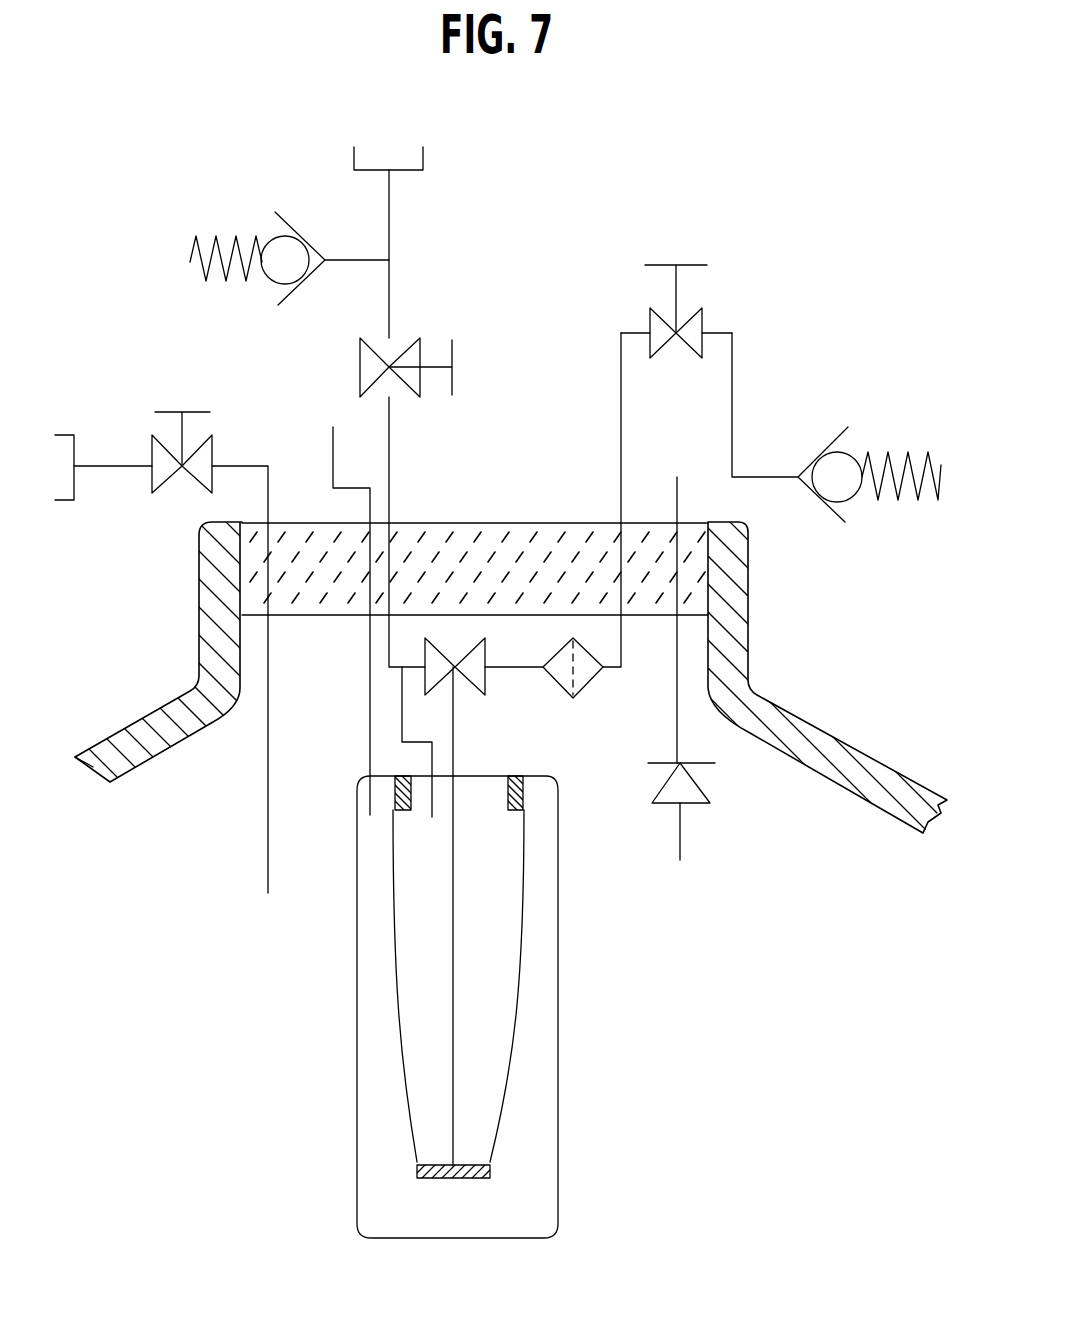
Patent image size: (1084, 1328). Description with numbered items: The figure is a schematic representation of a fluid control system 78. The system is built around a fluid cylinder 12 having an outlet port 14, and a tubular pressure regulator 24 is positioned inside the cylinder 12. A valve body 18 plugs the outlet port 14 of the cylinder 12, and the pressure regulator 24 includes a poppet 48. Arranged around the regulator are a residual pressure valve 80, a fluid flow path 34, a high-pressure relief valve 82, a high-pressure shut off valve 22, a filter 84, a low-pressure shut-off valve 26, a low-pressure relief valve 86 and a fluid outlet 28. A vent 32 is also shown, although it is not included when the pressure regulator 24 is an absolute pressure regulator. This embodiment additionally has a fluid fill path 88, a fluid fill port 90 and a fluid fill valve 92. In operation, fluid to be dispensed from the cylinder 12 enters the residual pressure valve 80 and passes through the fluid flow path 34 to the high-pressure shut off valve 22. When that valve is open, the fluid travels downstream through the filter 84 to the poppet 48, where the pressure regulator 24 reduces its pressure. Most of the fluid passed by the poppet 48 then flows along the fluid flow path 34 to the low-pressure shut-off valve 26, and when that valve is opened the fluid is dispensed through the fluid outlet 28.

The fluid cylinder 12 is at (160, 705).
The outlet port 14 is at (700, 516).
The valve body 18 is at (553, 530).
The high-pressure shut off valve 22 is at (703, 322).
The tubular pressure regulator 24 is at (560, 1183).
The low-pressure shut-off valve 26 is at (405, 336).
The fluid outlet 28 is at (395, 160).
The vent 32 is at (332, 460).
The fluid flow path 34 is at (390, 462).
The poppet 48 is at (485, 685).
The fluid control system 78 is at (197, 1048).
The residual pressure valve 80 is at (695, 807).
The high-pressure relief valve 82 is at (850, 500).
The filter 84 is at (592, 687).
The low-pressure relief valve 86 is at (288, 217).
The fluid fill path 88 is at (268, 815).
The fluid fill port 90 is at (63, 435).
The fluid fill valve 92 is at (162, 483).